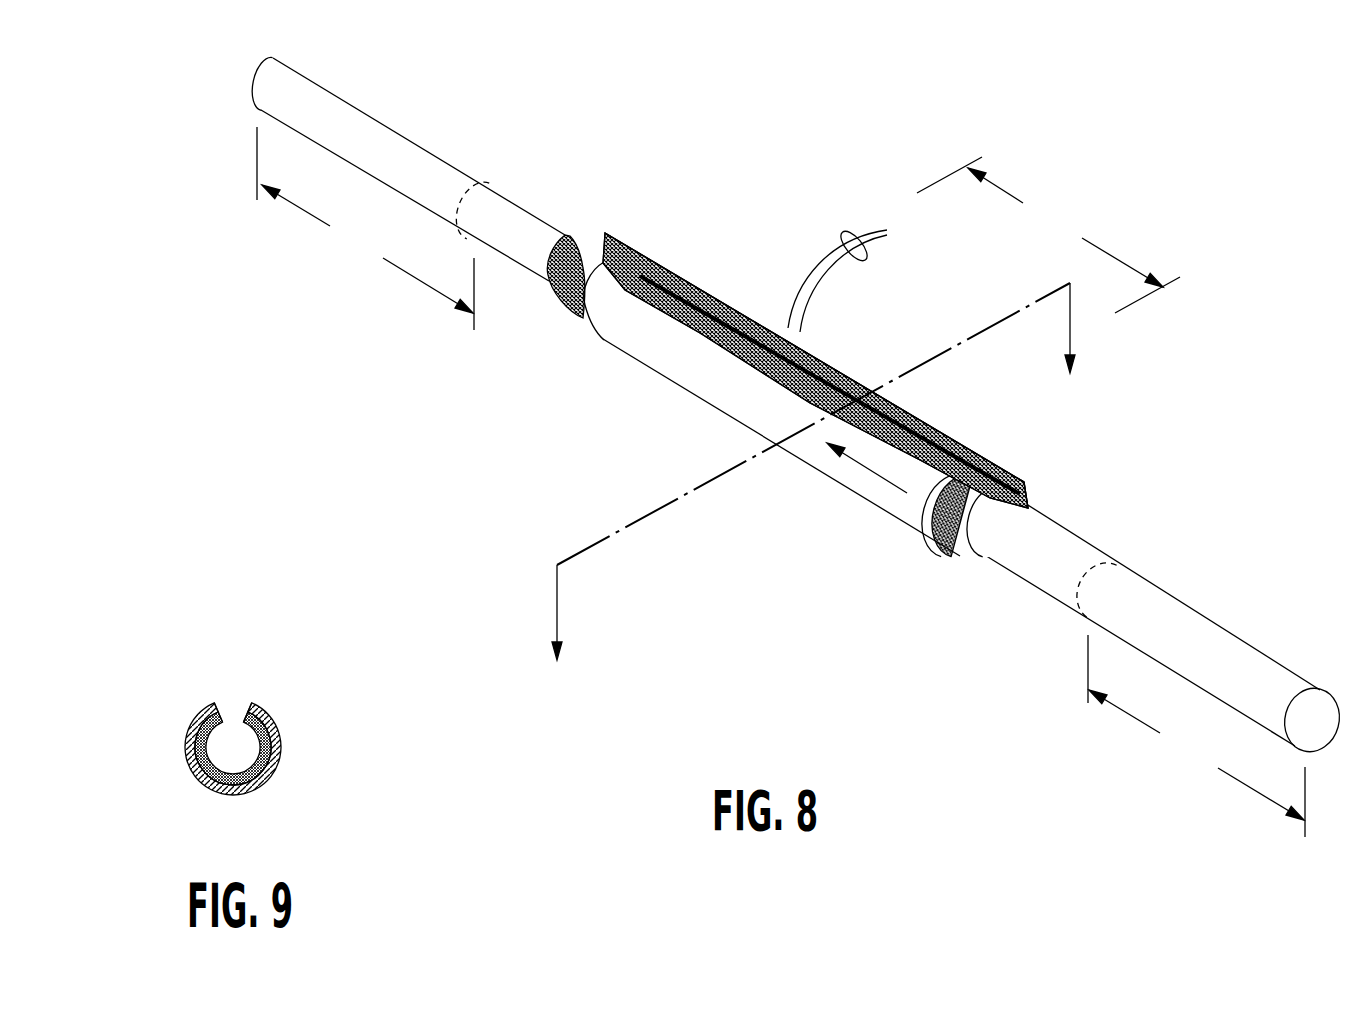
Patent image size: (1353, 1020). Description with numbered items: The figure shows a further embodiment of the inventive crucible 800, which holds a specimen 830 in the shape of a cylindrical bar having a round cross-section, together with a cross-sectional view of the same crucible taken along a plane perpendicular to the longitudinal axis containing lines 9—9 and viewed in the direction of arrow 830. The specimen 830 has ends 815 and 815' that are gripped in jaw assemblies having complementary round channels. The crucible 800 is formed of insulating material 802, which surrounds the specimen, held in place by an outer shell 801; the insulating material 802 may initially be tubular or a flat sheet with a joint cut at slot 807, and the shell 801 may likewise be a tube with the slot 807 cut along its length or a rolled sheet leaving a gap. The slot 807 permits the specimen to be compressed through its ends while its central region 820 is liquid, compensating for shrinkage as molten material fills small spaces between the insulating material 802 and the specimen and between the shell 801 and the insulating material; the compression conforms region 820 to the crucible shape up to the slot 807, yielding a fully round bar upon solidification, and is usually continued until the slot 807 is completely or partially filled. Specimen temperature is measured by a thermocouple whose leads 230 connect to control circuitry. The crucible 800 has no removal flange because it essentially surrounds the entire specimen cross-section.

In FIG. 8, the crucible 800 is at (841, 433).
In FIG. 9, the crucible 800 is at (278, 726).
In FIG. 8, the shell 801 is at (628, 323).
In FIG. 9, the shell 801 is at (270, 766).
In FIG. 8, the insulating material 802 is at (1024, 488).
In FIG. 9, the insulating material 802 is at (213, 704).
In FIG. 8, the slot 807 is at (990, 482).
In FIG. 9, the slot 807 is at (234, 682).
In FIG. 8, the end 815 is at (365, 228).
In FIG. 8, the end 815' is at (1196, 736).
In FIG. 8, the central region 820 is at (1048, 235).
In FIG. 8, the specimen 830 is at (517, 270).
In FIG. 8, the leads 230 is at (865, 258).
In FIG. 8, the section line 9 is at (814, 494).